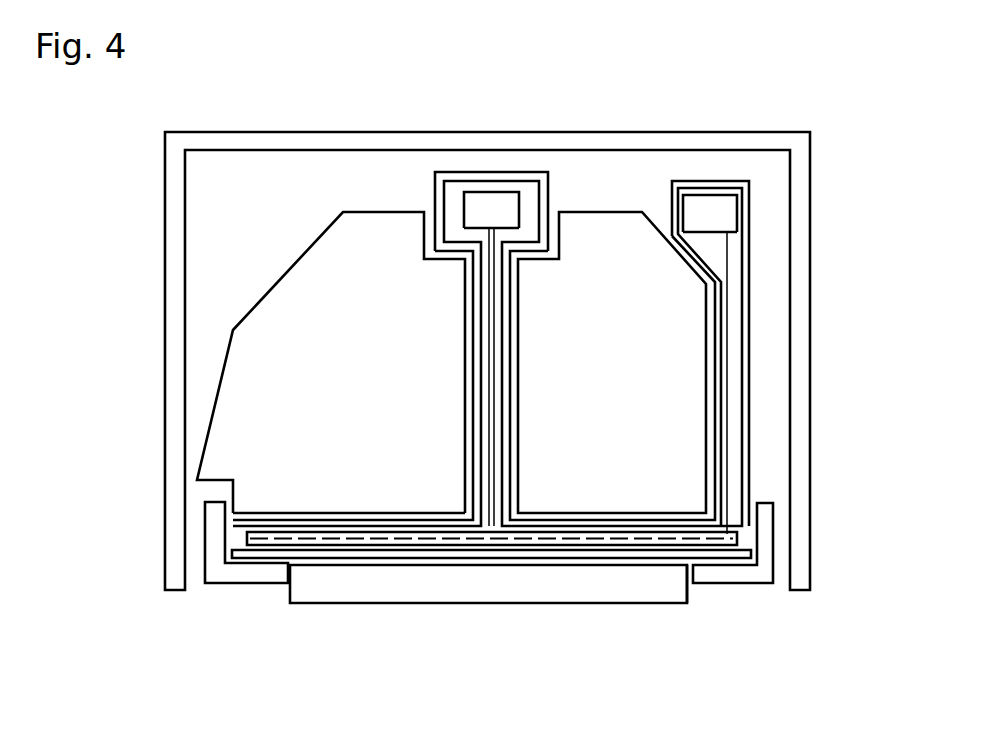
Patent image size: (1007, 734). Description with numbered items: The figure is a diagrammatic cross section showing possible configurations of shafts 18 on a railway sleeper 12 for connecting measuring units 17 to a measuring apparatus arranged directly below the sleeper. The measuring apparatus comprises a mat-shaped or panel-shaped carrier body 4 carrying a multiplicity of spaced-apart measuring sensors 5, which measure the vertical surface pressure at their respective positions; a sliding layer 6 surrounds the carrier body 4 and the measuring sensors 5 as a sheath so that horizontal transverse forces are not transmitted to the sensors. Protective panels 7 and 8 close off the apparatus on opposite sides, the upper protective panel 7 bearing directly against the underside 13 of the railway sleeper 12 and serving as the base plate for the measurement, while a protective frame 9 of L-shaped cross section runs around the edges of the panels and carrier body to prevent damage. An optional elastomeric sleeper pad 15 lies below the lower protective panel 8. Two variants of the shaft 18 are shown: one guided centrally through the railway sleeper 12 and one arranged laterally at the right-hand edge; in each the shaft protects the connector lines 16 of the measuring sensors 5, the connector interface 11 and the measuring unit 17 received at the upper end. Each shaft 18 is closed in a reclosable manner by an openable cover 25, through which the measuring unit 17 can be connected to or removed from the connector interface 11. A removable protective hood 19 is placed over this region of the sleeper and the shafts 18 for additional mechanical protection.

The carrier body 4 is at (735, 540).
The measuring sensors 5 is at (550, 538).
The sliding layer 6 is at (738, 535).
The protective panel 7 is at (672, 522).
The protective panel 8 is at (697, 572).
The protective frame 9 is at (258, 577).
The connector interface 11 is at (490, 233).
The railway sleeper 12 is at (262, 432).
The underside of the railway sleeper 13 is at (408, 505).
The sleeper pad 15 is at (602, 593).
The connector lines 16 is at (467, 262).
The measuring unit 17 is at (480, 213).
The shaft 18 is at (497, 287).
The protective hood 19 is at (690, 147).
The cover 25 is at (505, 180).